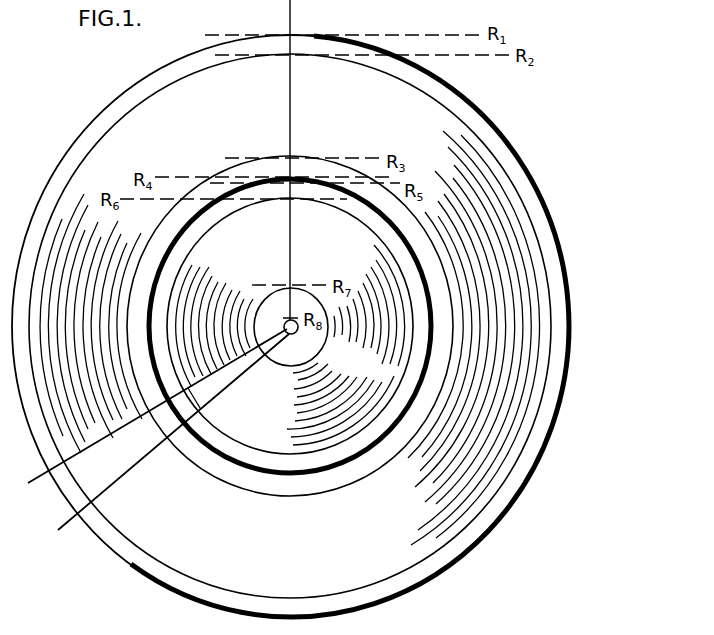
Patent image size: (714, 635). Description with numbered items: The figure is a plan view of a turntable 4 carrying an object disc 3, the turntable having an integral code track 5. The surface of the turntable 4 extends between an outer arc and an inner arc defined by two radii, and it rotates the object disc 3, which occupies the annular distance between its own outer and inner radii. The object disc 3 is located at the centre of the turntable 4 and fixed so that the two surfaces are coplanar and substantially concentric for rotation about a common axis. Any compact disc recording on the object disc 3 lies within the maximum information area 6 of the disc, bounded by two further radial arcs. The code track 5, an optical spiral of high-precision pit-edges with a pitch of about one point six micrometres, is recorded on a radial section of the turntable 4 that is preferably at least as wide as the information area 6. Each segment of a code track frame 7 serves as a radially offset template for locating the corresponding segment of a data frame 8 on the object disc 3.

The object disc 3 is at (289, 340).
The turntable 4 is at (437, 301).
The code track 5 is at (458, 328).
The maximum information area 6 is at (405, 390).
The data frame on code track 7 is at (68, 459).
The data frame on object disc 8 is at (188, 388).